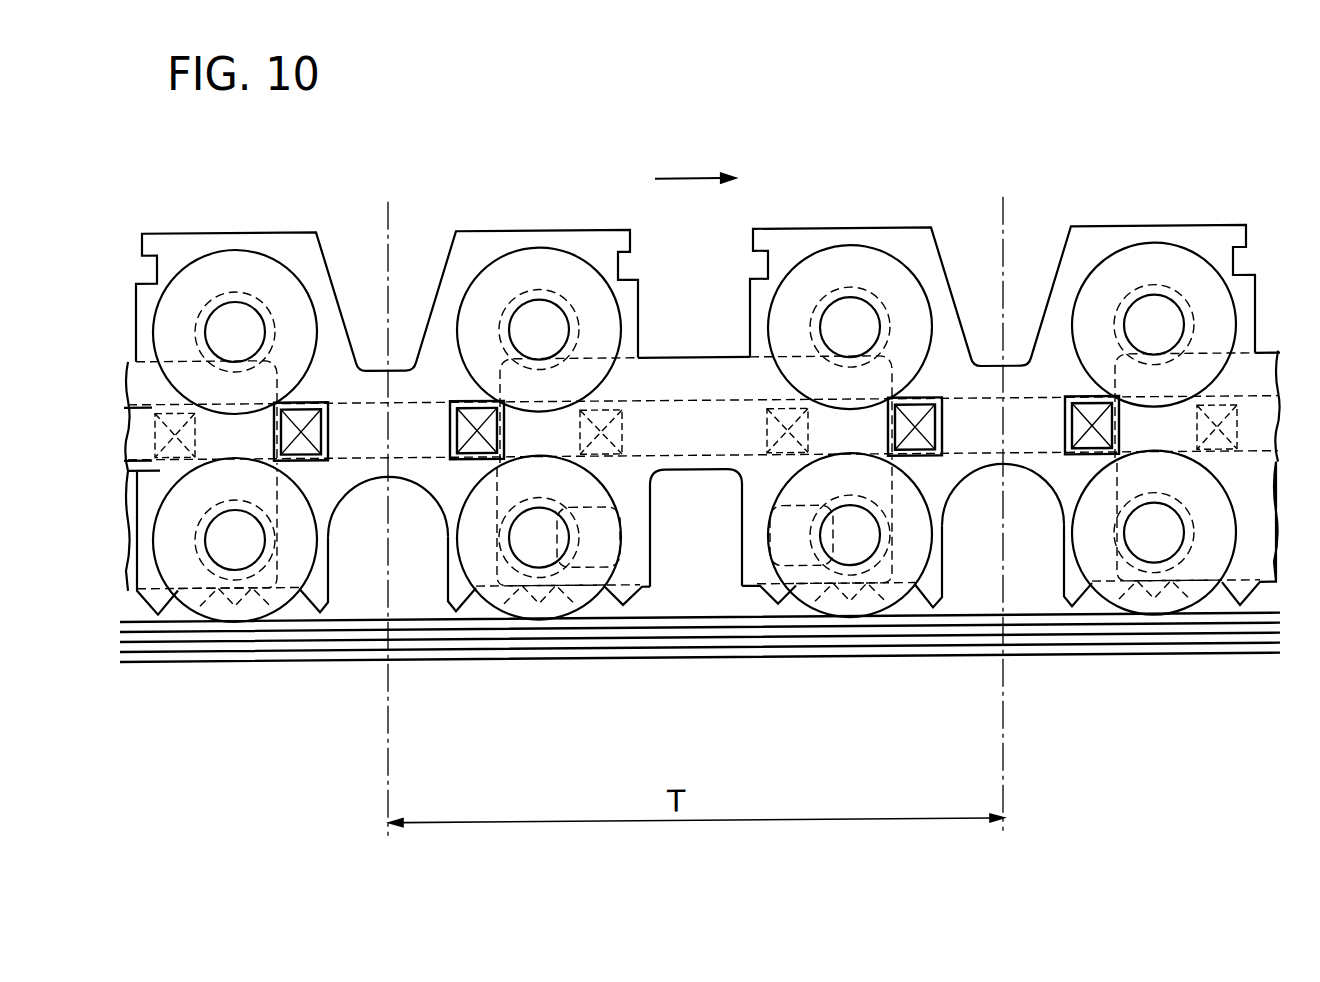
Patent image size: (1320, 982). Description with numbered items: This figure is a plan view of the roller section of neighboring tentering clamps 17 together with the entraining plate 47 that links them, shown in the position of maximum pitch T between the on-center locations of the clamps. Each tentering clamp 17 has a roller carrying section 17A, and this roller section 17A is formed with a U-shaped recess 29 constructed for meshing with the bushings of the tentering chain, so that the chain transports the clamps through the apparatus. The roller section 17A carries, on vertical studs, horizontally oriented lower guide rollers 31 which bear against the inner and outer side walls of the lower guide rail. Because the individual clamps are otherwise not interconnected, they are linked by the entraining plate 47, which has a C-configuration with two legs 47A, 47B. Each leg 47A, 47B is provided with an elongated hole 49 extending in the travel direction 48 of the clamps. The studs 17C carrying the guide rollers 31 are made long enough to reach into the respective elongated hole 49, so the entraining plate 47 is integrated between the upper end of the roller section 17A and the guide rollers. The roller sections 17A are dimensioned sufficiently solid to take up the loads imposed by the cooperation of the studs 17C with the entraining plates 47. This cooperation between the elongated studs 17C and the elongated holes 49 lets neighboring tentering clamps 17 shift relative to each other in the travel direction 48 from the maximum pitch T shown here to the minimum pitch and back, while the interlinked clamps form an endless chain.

The tentering clamp 17 is at (208, 218).
The roller carrying section 17A is at (470, 244).
The stud 17C is at (528, 557).
The U-shaped recess 29 is at (448, 517).
The lower guide roller 31 is at (225, 612).
The entraining plate 47 is at (658, 384).
The leg of entraining plate 47A is at (653, 544).
The leg of entraining plate 47B is at (740, 564).
The travel direction 48 is at (657, 182).
The elongated hole 49 is at (595, 560).